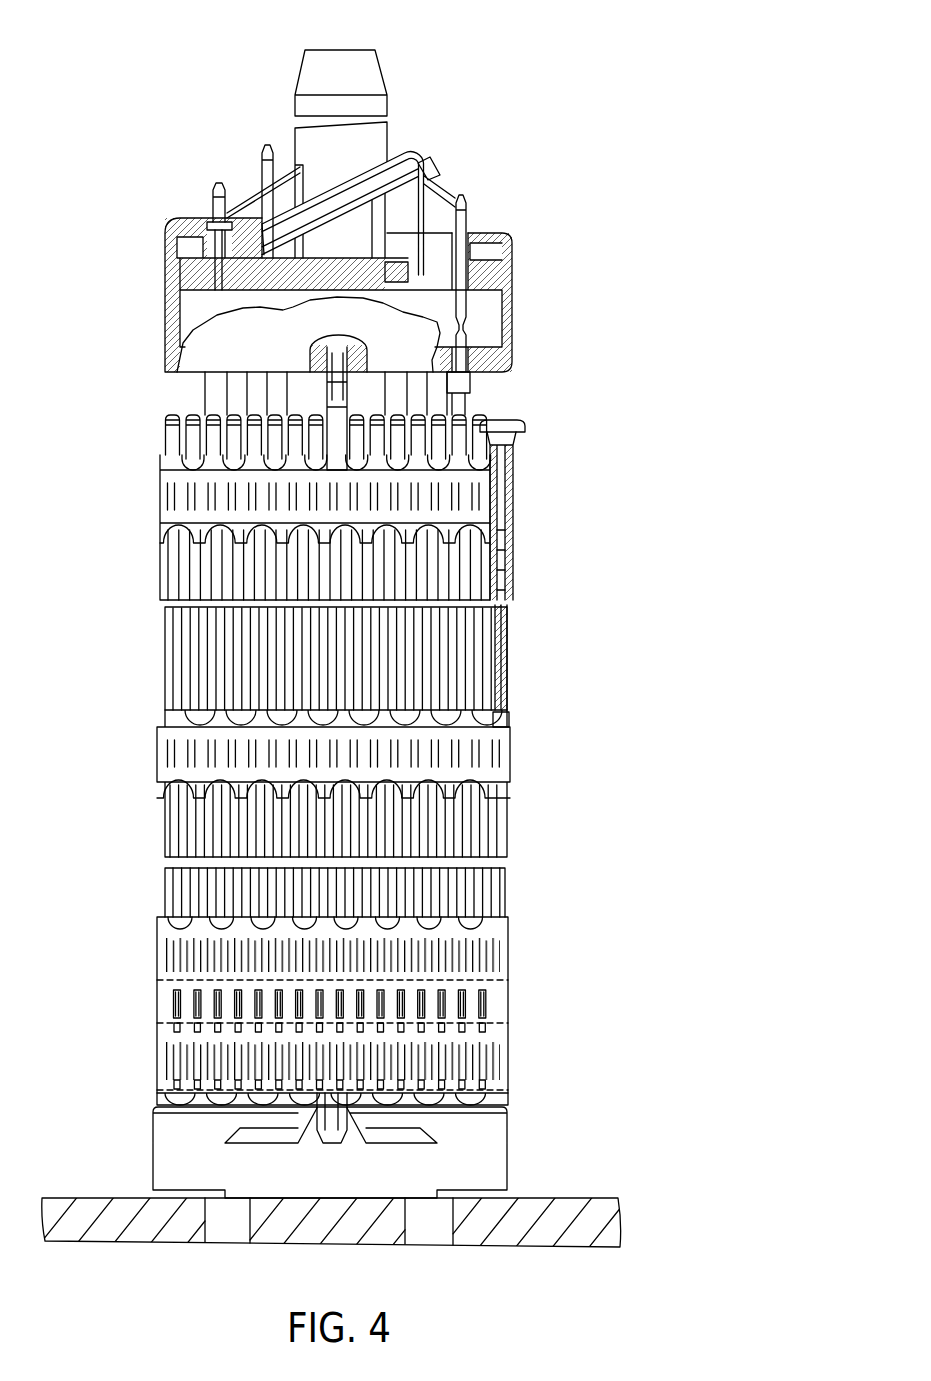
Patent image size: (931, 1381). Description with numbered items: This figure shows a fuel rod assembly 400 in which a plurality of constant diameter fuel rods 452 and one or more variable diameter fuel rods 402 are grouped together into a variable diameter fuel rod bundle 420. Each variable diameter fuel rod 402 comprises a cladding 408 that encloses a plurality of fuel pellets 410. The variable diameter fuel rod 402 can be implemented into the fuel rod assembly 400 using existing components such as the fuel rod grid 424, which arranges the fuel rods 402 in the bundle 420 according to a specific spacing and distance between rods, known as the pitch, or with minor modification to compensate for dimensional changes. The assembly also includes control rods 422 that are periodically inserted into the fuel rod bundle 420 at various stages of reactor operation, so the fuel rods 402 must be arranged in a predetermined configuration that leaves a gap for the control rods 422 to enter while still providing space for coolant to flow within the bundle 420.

The fuel rod assembly 400 is at (518, 86).
The variable diameter fuel rod 402 is at (514, 432).
The cladding 408 is at (508, 487).
The fuel pellets 410 is at (505, 580).
The variable diameter fuel rod bundle 420 is at (110, 423).
The control rods 422 is at (207, 398).
The fuel rod grid 424 is at (160, 505).
The constant diameter fuel rods 452 is at (163, 665).